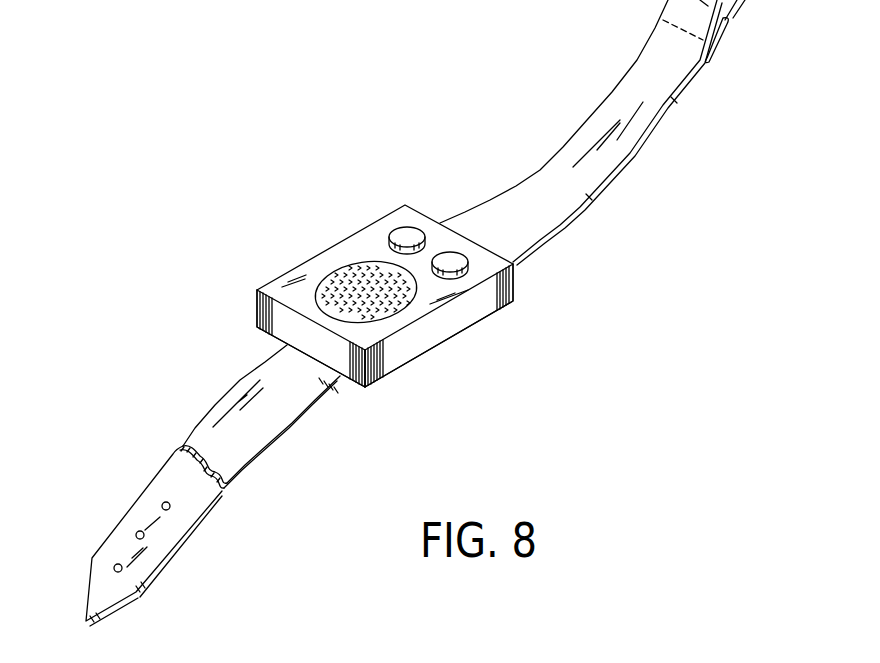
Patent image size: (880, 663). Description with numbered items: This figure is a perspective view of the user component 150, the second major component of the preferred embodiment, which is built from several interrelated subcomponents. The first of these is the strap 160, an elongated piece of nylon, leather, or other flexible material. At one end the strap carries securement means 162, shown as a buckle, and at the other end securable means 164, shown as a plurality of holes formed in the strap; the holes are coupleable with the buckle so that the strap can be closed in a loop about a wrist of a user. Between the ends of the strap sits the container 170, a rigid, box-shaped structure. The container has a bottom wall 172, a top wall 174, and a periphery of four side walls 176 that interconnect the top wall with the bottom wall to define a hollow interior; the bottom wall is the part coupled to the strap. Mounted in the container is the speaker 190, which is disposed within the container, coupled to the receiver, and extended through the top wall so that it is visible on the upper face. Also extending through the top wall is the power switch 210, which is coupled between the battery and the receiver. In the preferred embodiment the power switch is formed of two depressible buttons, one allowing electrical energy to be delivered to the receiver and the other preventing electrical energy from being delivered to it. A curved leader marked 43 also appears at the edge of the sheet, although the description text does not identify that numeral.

The support member 43 is at (33, 0).
The user component 150 is at (540, 321).
The strap 160 is at (617, 140).
The securement means 162 is at (735, 0).
The securable means 164 is at (137, 534).
The container 170 is at (353, 306).
The bottom wall 172 is at (453, 343).
The top wall 174 is at (358, 242).
The side walls 176 is at (273, 327).
The speaker 190 is at (350, 297).
The power switch 210 is at (423, 232).